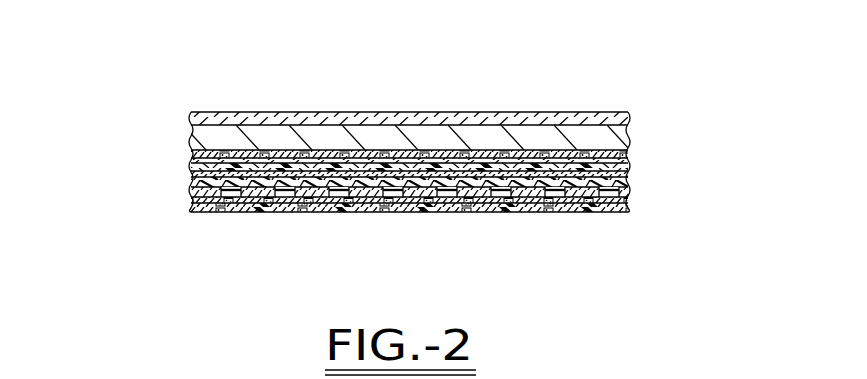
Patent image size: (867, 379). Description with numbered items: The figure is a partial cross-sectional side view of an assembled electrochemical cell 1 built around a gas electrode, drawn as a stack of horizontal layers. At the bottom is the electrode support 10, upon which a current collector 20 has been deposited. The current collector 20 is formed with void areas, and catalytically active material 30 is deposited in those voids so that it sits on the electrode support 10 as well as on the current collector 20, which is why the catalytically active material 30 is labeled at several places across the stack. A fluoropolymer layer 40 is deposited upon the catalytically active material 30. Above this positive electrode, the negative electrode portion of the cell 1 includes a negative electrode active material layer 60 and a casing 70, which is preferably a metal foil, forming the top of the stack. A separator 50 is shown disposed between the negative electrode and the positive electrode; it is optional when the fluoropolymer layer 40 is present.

The cell 1 is at (283, 100).
The electrode support 10 is at (192, 207).
The current collector 20 is at (631, 196).
The catalytically active material 30 is at (191, 180).
The fluoropolymer layer 40 is at (631, 170).
The separator 50 is at (191, 158).
The negative electrode active material layer 60 is at (631, 139).
The casing 70 is at (192, 118).